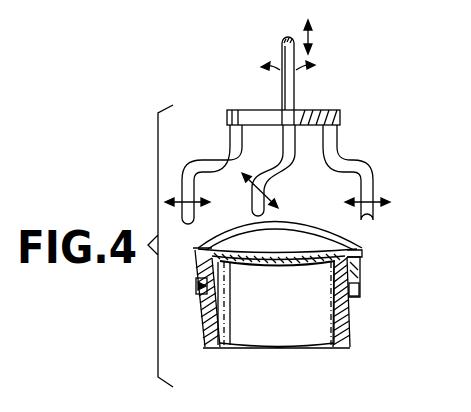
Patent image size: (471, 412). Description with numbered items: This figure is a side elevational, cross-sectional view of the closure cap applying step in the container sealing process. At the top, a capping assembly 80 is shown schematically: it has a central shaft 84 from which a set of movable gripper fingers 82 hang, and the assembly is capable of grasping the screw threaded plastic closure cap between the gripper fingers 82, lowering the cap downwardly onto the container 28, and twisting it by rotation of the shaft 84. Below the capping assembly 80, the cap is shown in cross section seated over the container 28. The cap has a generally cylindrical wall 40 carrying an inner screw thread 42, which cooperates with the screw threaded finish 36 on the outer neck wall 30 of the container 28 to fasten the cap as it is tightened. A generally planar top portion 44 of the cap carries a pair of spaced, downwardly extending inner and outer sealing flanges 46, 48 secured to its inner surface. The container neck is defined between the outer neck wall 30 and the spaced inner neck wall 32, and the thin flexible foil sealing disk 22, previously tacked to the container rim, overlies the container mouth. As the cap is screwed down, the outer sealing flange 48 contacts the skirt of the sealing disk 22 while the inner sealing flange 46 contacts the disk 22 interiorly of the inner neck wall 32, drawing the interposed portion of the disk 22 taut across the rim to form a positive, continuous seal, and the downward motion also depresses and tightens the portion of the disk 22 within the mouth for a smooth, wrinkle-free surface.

The flexible foil sealing disk 22 is at (283, 276).
The container 28 is at (206, 349).
The outer neck wall 30 is at (345, 328).
The inner neck wall 32 is at (330, 350).
The screw threaded finish 36 is at (199, 277).
The cylindrical wall 40 is at (362, 277).
The inner screw thread 42 is at (362, 292).
The top portion 44 is at (302, 245).
The inner sealing flange 46 is at (236, 270).
The outer sealing flange 48 is at (195, 250).
The capping assembly 80 is at (346, 143).
The gripper fingers 82 is at (185, 182).
The shaft 84 is at (295, 89).